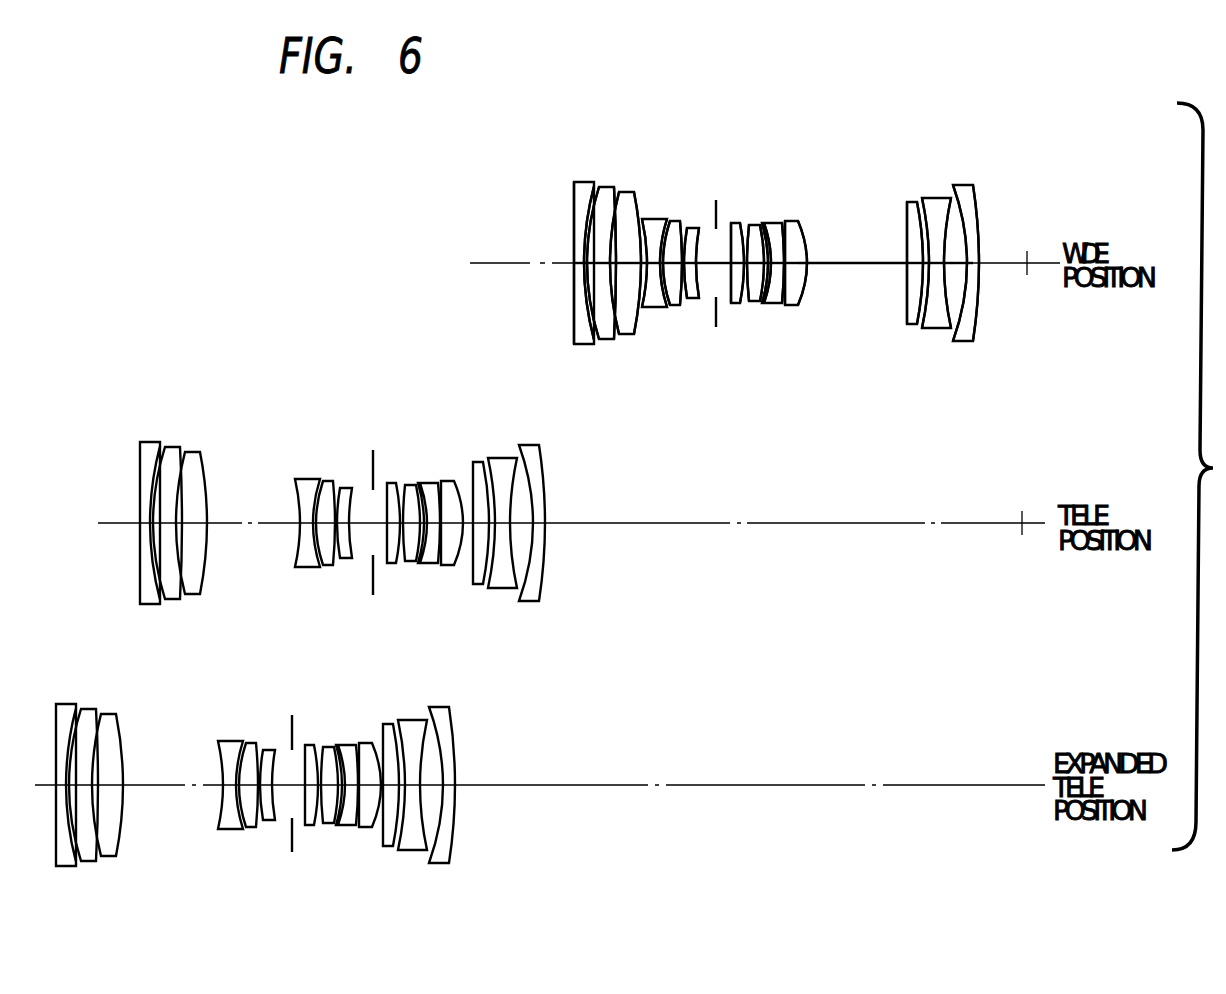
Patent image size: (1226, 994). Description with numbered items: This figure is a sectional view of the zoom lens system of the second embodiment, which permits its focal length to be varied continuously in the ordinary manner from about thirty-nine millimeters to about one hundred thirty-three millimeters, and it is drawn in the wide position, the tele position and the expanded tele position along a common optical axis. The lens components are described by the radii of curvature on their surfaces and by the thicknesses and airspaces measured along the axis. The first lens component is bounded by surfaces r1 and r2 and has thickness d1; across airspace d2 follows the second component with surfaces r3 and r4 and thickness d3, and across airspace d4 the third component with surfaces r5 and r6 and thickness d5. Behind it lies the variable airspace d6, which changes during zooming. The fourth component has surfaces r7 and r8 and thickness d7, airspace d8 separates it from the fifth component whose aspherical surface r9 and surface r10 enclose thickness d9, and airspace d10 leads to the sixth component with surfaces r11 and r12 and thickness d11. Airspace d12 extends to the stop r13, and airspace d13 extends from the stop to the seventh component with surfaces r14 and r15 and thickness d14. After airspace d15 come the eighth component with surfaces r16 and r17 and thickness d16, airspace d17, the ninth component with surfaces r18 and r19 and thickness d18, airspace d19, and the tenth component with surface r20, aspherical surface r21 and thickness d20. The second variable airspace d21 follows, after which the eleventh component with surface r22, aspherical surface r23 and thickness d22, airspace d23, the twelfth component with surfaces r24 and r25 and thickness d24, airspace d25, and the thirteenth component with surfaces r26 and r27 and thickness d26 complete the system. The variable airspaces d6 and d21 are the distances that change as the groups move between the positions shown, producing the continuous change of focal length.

The radius of curvature of first lens surface r1 is at (574, 207).
The radius of curvature of second lens surface r2 is at (594, 187).
The radius of curvature of third lens surface r3 is at (599, 187).
The radius of curvature of fourth lens surface r4 is at (614, 187).
The radius of curvature of fifth lens surface r5 is at (619, 192).
The radius of curvature of sixth lens surface r6 is at (634, 192).
The radius of curvature of seventh lens surface r7 is at (642, 219).
The radius of curvature of eighth lens surface r8 is at (667, 219).
The radius of curvature of ninth lens surface r9 is at (670, 221).
The radius of curvature of tenth lens surface r10 is at (680, 221).
The radius of curvature of eleventh lens surface r11 is at (687, 228).
The radius of curvature of twelfth lens surface r12 is at (699, 228).
The stop surface r13 is at (731, 223).
The radius of curvature of fourteenth lens surface r14 is at (740, 223).
The radius of curvature of fifteenth lens surface r15 is at (749, 225).
The radius of curvature of sixteenth lens surface r16 is at (760, 225).
The radius of curvature of seventeenth lens surface r17 is at (762, 223).
The radius of curvature of eighteenth lens surface r18 is at (764, 223).
The radius of curvature of nineteenth lens surface r19 is at (782, 223).
The radius of curvature of twentieth lens surface r20 is at (785, 221).
The radius of curvature of twenty-first lens surface r21 is at (798, 221).
The radius of curvature of twenty-second lens surface r22 is at (907, 202).
The radius of curvature of twenty-third lens surface r23 is at (917, 202).
The radius of curvature of twenty-fourth lens surface r24 is at (922, 198).
The radius of curvature of twenty-fifth lens surface r25 is at (951, 198).
The radius of curvature of twenty-sixth lens surface r26 is at (953, 185).
The radius of curvature of twenty-seventh lens surface r27 is at (975, 185).
The thickness of first lens component d1 is at (586, 280).
The airspace between first and second lens components d2 is at (596, 262).
The thickness of second lens component d3 is at (604, 296).
The airspace between second and third lens components d4 is at (612, 320).
The thickness of third lens component d5 is at (622, 336).
The variable airspace behind third lens component d6 is at (636, 332).
The thickness of fourth lens component d7 is at (652, 310).
The airspace between fourth and fifth lens components d8 is at (667, 307).
The thickness of fifth lens component d9 is at (674, 305).
The airspace between fifth and sixth lens components d10 is at (683, 302).
The thickness of sixth lens component d11 is at (693, 300).
The airspace between sixth lens component and stop d12 is at (714, 300).
The airspace between stop and seventh lens component d13 is at (735, 304).
The thickness of seventh lens component d14 is at (745, 304).
The airspace between seventh and eighth lens components d15 is at (754, 303).
The thickness of eighth lens component d16 is at (761, 302).
The airspace between eighth and ninth lens components d17 is at (772, 262).
The thickness of ninth lens component d18 is at (773, 304).
The airspace between ninth and tenth lens components d19 is at (784, 305).
The thickness of tenth lens component d20 is at (792, 306).
The variable airspace behind tenth lens component d21 is at (845, 270).
The thickness of eleventh lens component d22 is at (912, 276).
The airspace between eleventh and twelfth lens components d23 is at (919, 290).
The thickness of twelfth lens component d24 is at (936, 292).
The airspace between twelfth and thirteenth lens components d25 is at (951, 278).
The thickness of thirteenth lens component d26 is at (963, 292).